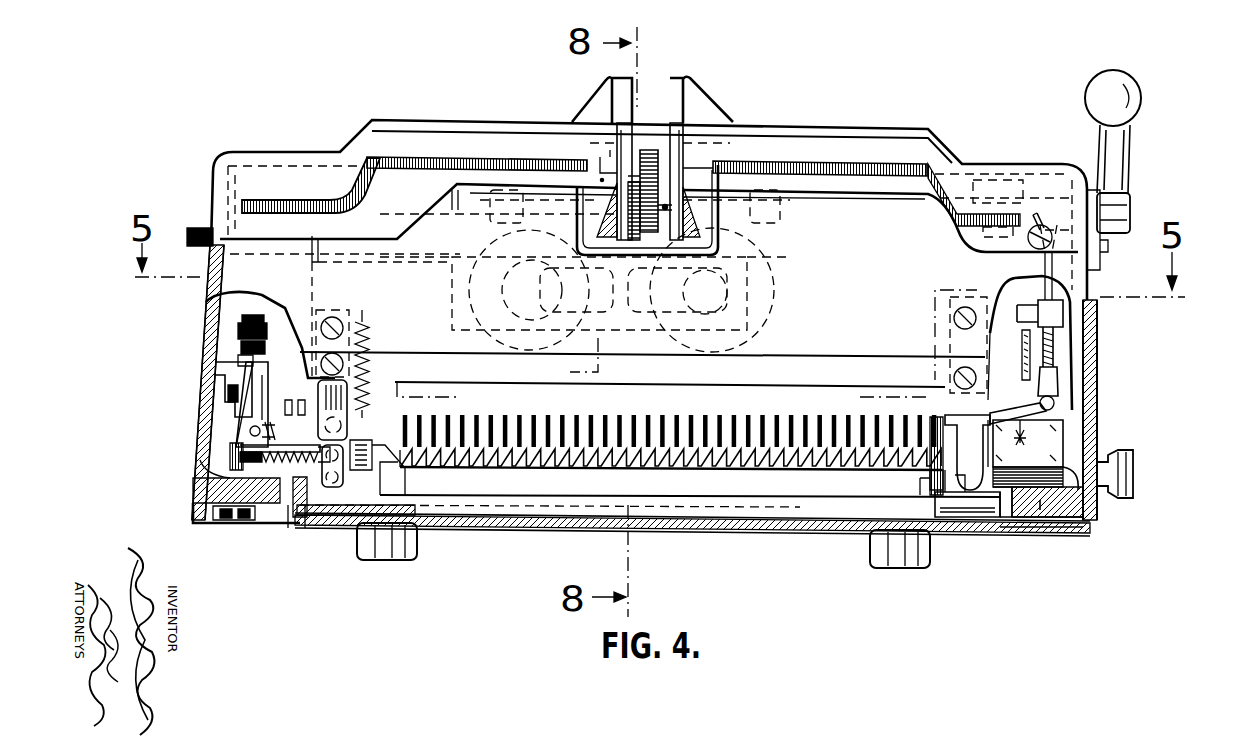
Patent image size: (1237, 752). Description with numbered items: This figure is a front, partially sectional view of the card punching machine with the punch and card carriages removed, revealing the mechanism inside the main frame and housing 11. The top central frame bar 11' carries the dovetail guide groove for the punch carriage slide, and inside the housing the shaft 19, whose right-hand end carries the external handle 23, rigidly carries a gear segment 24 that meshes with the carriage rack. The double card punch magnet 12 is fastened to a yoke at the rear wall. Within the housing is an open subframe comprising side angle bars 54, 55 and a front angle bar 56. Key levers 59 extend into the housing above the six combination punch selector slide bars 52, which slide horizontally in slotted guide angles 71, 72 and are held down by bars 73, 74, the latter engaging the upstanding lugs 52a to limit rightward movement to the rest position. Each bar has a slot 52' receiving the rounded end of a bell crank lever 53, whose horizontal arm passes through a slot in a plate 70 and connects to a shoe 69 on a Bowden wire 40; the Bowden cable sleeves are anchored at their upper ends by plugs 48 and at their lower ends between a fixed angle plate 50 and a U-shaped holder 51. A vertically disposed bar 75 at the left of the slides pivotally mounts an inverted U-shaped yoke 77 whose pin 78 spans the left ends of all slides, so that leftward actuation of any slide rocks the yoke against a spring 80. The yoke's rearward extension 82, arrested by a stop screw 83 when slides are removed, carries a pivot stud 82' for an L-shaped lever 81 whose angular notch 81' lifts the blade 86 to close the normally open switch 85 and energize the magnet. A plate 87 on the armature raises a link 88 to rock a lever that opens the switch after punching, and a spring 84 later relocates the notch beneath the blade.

The main frame and housing 11 is at (642, 272).
The top central frame bar 11' is at (647, 108).
The double card punch magnet 12 is at (767, 277).
The shaft 19 is at (1087, 195).
The external handle 23 is at (1133, 82).
The gear segment 24 is at (648, 150).
The Bowden wires 40 is at (1052, 343).
The plug 48 is at (1026, 244).
The fixed angle plate 50 is at (1015, 362).
The U-shaped holder 51 is at (1063, 307).
The combination punch selector slide bars 52 is at (669, 506).
The upstanding lugs 52a is at (913, 482).
The slot 52' is at (991, 549).
The bell crank lever 53 is at (1004, 452).
The side angle bar 54 is at (322, 475).
The side angle bar 55 is at (1000, 540).
The front angle bar 56 is at (478, 520).
The key levers 59 is at (795, 456).
The shoe 69 is at (1053, 393).
The plate 70 is at (1026, 442).
The slotted guide angle 71 is at (367, 500).
The slotted guide angle 72 is at (920, 540).
The bar 73 is at (402, 525).
The bar 74 is at (932, 482).
The vertically disposed bar 75 is at (650, 455).
The inverted U-shaped yoke 77 is at (264, 534).
The pin 78 is at (333, 490).
The spring 80 is at (363, 357).
The L-shaped lever 81 is at (176, 404).
The angular notch 81' is at (275, 375).
The rearward extension 82 is at (207, 488).
The pivot stud 82' is at (179, 460).
The stop screw 83 is at (277, 460).
The spring 84 is at (250, 523).
The normally open switch 85 is at (238, 328).
The blade 86 is at (215, 365).
The plate 87 is at (621, 187).
The link 88 is at (312, 266).